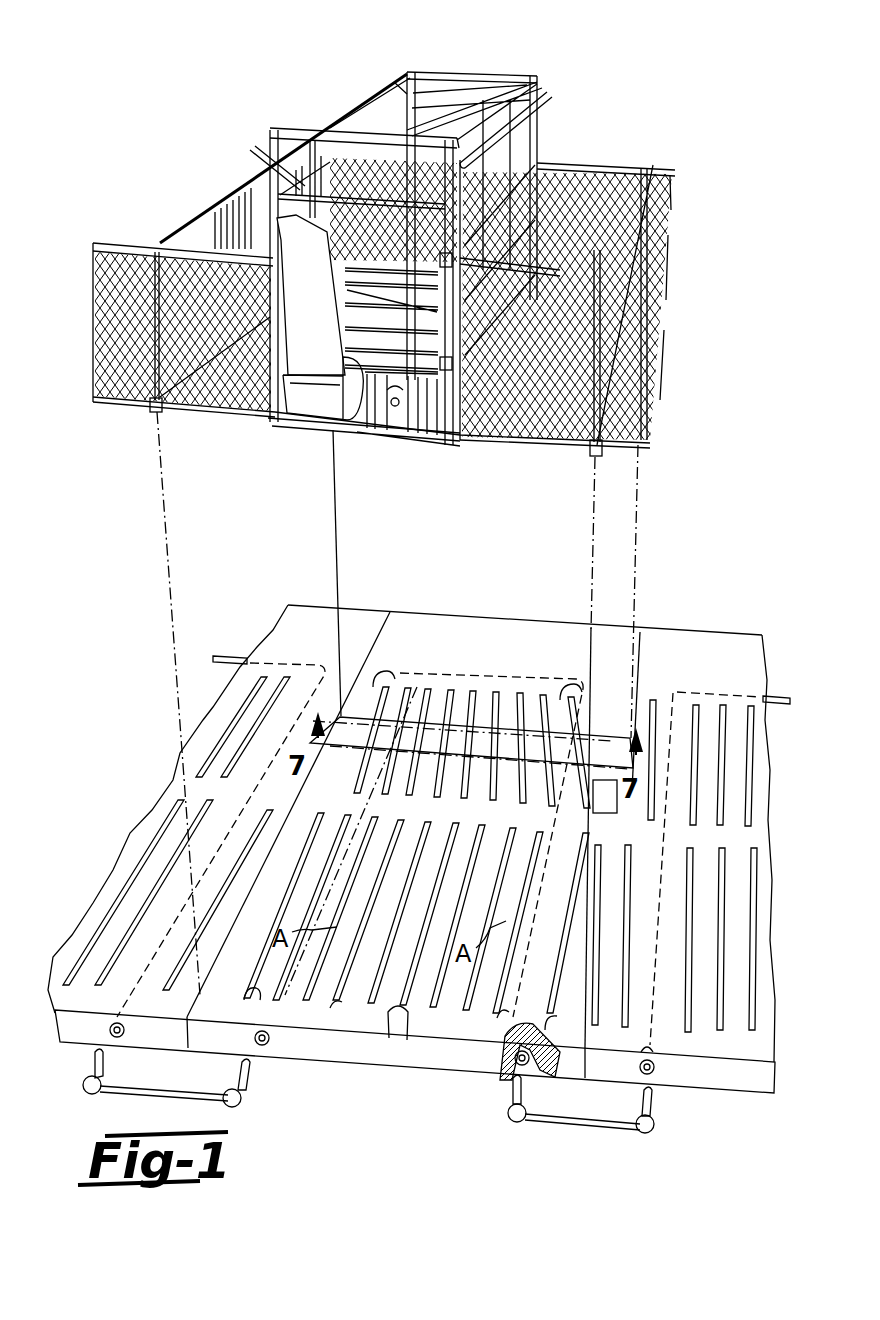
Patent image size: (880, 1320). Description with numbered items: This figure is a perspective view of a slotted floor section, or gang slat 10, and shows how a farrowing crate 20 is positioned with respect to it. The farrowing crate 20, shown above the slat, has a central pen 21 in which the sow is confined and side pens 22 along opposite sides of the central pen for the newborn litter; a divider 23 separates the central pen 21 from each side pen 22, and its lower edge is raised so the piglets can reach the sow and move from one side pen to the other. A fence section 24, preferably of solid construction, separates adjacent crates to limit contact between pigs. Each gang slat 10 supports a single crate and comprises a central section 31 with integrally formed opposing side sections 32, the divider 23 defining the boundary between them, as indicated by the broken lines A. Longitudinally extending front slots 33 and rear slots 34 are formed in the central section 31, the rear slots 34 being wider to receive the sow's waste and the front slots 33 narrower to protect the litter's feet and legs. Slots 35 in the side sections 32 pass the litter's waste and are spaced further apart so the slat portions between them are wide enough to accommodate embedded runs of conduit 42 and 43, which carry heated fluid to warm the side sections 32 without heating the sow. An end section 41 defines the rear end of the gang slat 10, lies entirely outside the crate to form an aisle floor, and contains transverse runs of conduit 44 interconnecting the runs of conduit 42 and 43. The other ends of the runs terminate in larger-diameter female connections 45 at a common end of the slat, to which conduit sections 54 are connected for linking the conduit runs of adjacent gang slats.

The gang slat 10 is at (305, 603).
The farrowing crate 20 is at (506, 64).
The central pen 21 is at (404, 446).
The side pen 22 is at (236, 430).
The divider 23 is at (306, 202).
The fence section 24 is at (203, 236).
The central section 31 is at (490, 800).
The side section 32 is at (464, 767).
The front slot 33 is at (398, 1038).
The rear slot 34 is at (506, 694).
The side section slot 35 is at (379, 678).
The end section 41 is at (416, 628).
The run of conduit 42 is at (252, 1045).
The run of conduit 43 is at (500, 1060).
The transverse run of conduit 44 is at (245, 662).
The female connection 45 is at (124, 1040).
The conduit section 54 is at (168, 1098).